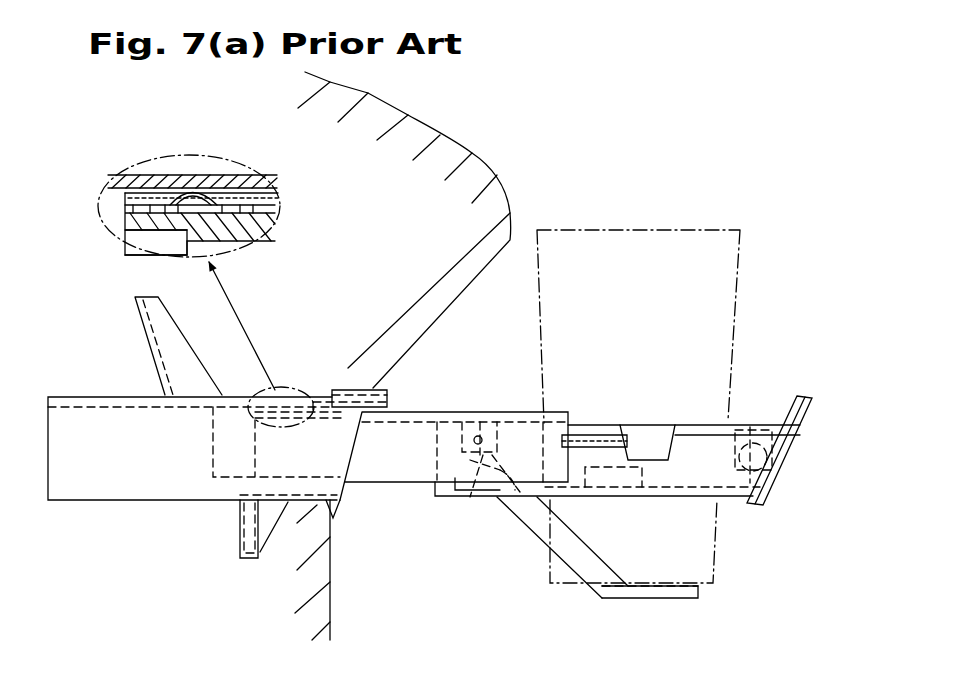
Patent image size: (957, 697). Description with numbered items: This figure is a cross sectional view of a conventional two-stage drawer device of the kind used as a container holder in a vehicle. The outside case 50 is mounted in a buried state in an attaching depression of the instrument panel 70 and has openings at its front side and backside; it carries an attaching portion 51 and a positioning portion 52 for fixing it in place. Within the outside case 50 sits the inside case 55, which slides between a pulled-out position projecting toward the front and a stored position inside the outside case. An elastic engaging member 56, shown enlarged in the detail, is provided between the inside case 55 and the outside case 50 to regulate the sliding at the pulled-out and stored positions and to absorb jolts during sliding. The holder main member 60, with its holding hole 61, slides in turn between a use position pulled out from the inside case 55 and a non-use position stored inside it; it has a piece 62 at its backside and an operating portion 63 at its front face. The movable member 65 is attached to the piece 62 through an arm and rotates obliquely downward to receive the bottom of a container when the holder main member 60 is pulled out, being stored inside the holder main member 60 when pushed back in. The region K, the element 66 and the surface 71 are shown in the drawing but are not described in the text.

The outside case 50 is at (128, 178).
The attaching portion 51 is at (140, 320).
The positioning portion 52 is at (240, 555).
The inside case 55 is at (134, 228).
The elastic engaging member 56 is at (200, 186).
The holder main member 60 is at (455, 499).
The holding hole 61 is at (692, 428).
The piece 62 is at (492, 425).
The operating portion 63 is at (757, 507).
The movable member 65 is at (613, 601).
The link 66 is at (480, 497).
The instrument panel 70 is at (420, 118).
The wall 71 is at (333, 522).
The cartridge region K is at (646, 230).